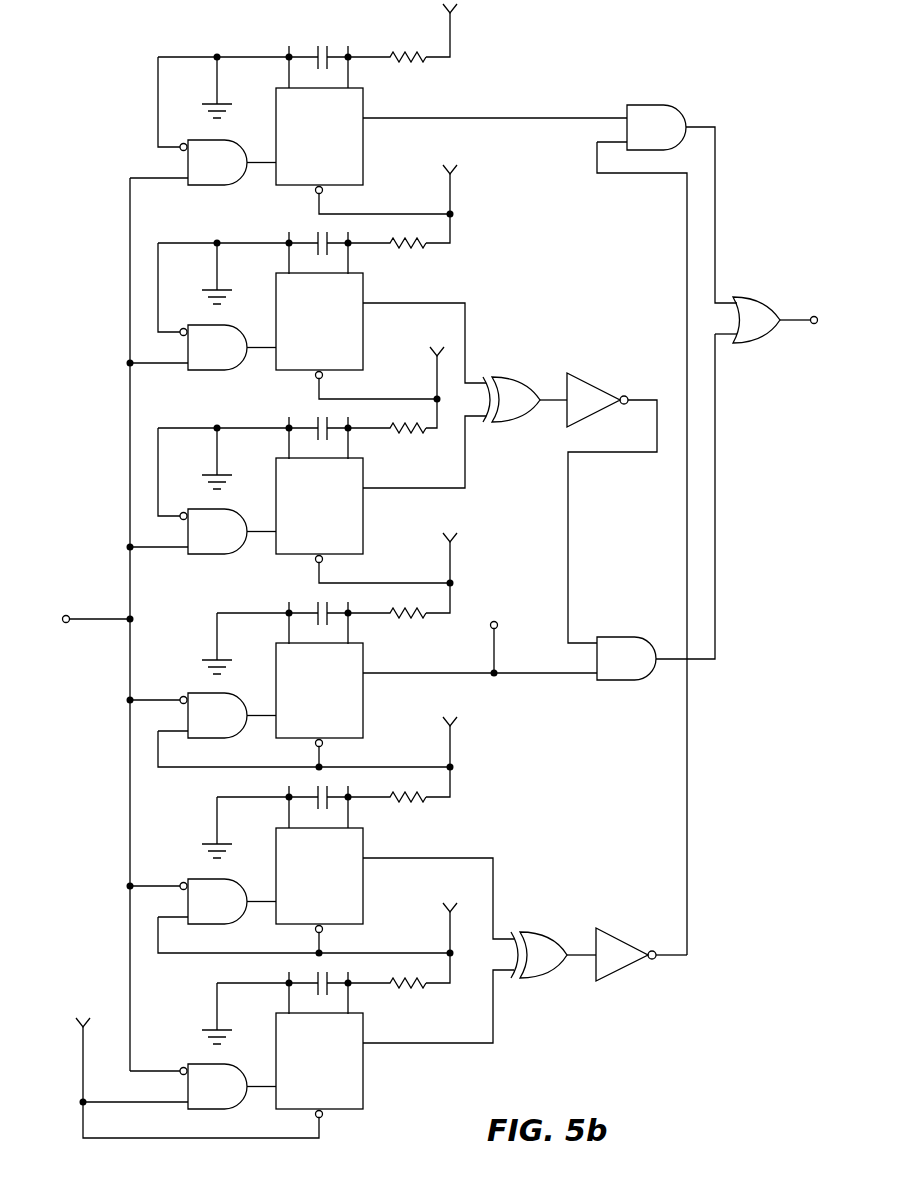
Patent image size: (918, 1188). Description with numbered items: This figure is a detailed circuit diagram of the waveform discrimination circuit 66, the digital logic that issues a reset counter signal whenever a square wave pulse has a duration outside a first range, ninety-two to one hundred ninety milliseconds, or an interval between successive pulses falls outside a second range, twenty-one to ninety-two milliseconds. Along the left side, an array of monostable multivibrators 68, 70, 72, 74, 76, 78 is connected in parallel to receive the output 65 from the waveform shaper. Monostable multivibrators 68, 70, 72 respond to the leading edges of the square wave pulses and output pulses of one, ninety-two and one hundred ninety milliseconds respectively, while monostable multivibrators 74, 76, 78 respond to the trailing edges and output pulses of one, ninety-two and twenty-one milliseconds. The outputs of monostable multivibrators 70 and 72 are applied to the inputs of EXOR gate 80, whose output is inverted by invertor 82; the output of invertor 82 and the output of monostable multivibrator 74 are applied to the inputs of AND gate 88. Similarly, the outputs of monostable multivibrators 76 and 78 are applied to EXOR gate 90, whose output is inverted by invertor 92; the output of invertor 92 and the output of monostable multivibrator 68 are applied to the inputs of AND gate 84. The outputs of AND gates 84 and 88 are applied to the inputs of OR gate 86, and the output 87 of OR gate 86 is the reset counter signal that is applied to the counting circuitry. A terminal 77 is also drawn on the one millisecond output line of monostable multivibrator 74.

The output from the waveform shaper 65 is at (88, 623).
The waveform discrimination circuit 66 is at (128, 81).
The monostable multivibrator 68 is at (363, 157).
The monostable multivibrator 70 is at (363, 340).
The monostable multivibrator 72 is at (363, 525).
The monostable multivibrator 74 is at (363, 709).
The monostable multivibrator 76 is at (363, 895).
The output terminal 77 is at (497, 650).
The monostable multivibrator 78 is at (363, 1080).
The EXOR gate 80 is at (517, 378).
The invertor 82 is at (592, 386).
The AND gate 84 is at (655, 105).
The OR gate 86 is at (762, 297).
The output of OR gate 87 is at (795, 326).
The AND gate 88 is at (624, 637).
The EXOR gate 90 is at (549, 932).
The invertor 92 is at (619, 940).